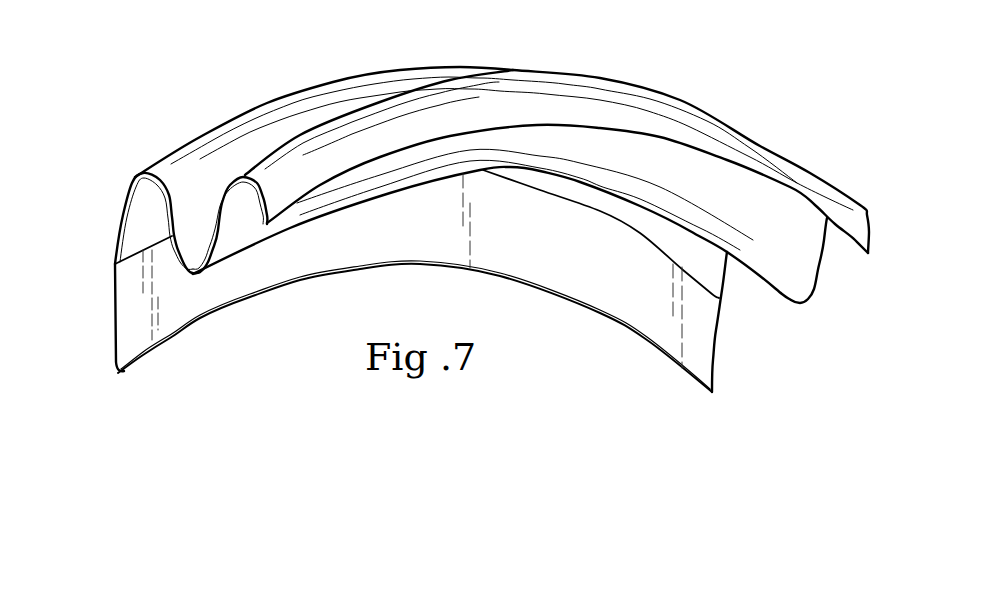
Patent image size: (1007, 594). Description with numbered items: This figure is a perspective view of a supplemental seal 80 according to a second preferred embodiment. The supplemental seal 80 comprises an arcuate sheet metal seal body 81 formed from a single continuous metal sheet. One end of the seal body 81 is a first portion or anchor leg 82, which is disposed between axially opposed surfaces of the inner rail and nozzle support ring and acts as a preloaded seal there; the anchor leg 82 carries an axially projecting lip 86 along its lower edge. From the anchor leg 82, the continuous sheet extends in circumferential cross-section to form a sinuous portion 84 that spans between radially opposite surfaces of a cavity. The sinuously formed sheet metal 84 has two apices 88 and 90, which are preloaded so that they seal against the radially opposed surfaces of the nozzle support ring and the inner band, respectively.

The supplemental seal 80 is at (88, 297).
The seal body 81 is at (627, 218).
The anchor leg 82 is at (132, 330).
The sinuous portion 84 is at (408, 85).
The axially projecting lip 86 is at (204, 323).
The apex 88 is at (340, 77).
The apex 90 is at (223, 260).